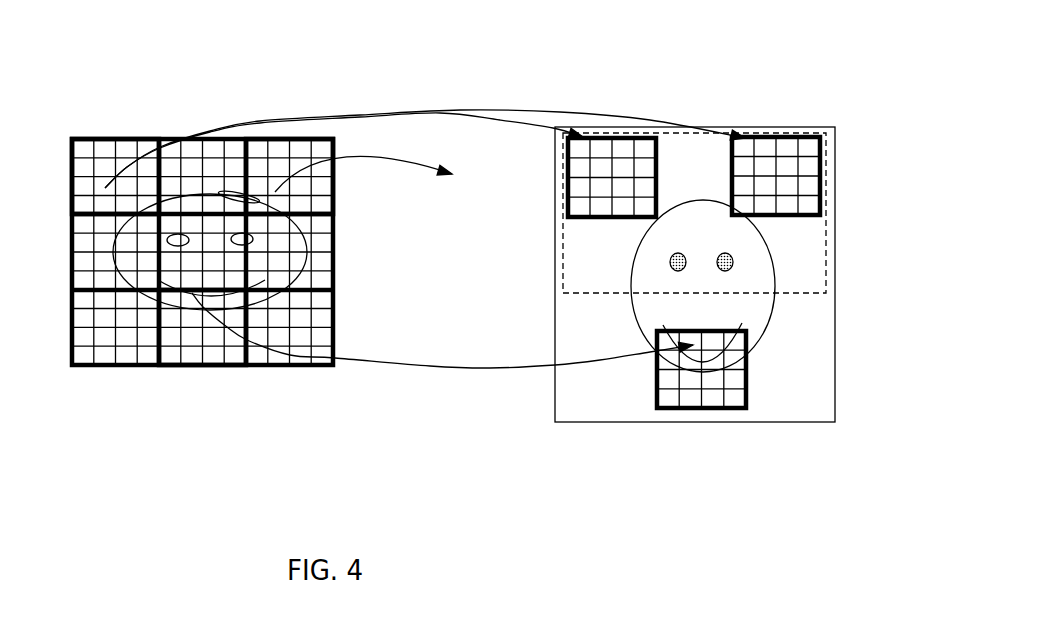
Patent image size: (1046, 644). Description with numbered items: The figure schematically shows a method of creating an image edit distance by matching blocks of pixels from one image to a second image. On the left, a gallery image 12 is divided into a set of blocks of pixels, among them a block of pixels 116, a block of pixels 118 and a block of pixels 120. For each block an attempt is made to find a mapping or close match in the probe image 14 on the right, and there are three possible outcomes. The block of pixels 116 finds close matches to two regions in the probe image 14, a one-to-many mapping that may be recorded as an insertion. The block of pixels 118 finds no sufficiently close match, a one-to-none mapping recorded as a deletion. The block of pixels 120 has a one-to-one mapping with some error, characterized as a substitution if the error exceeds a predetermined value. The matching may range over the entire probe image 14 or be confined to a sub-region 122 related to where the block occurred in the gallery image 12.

The gallery image 12 is at (162, 367).
The probe image 14 is at (642, 422).
The block of pixels 116 is at (103, 138).
The block of pixels 118 is at (290, 158).
The block of pixels 120 is at (192, 293).
The sub-region 122 is at (797, 292).